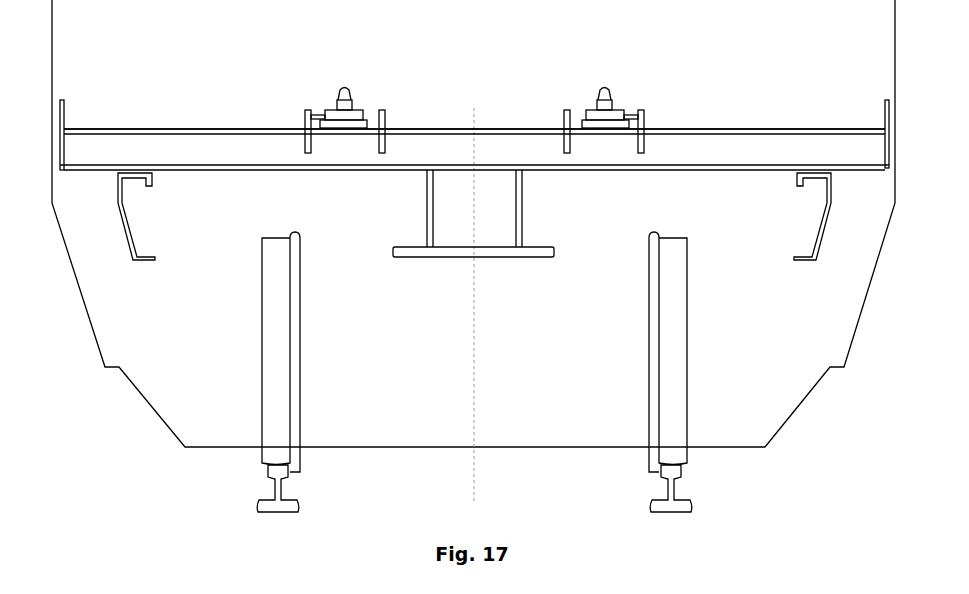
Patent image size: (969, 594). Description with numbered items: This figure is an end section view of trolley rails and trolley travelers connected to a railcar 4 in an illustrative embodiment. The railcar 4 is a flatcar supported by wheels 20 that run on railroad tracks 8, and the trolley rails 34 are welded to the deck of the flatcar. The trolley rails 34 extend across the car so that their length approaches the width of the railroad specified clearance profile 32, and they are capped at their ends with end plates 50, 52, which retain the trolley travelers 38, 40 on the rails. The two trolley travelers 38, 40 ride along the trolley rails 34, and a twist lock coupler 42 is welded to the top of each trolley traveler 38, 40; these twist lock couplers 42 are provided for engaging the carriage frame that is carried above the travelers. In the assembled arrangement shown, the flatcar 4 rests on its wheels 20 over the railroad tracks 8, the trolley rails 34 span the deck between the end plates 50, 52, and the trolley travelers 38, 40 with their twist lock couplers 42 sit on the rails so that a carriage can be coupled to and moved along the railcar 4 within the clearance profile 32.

The railcar 4 is at (118, 183).
The railroad tracks 8 is at (474, 318).
The wheels 20 is at (687, 333).
The railroad specified clearance profile 32 is at (806, 390).
The trolley rail 34 is at (122, 127).
The trolley traveler 38 is at (308, 116).
The trolley traveler 40 is at (567, 112).
The twist lock coupler 42 is at (355, 104).
The end plate 50 is at (64, 110).
The end plate 52 is at (886, 118).